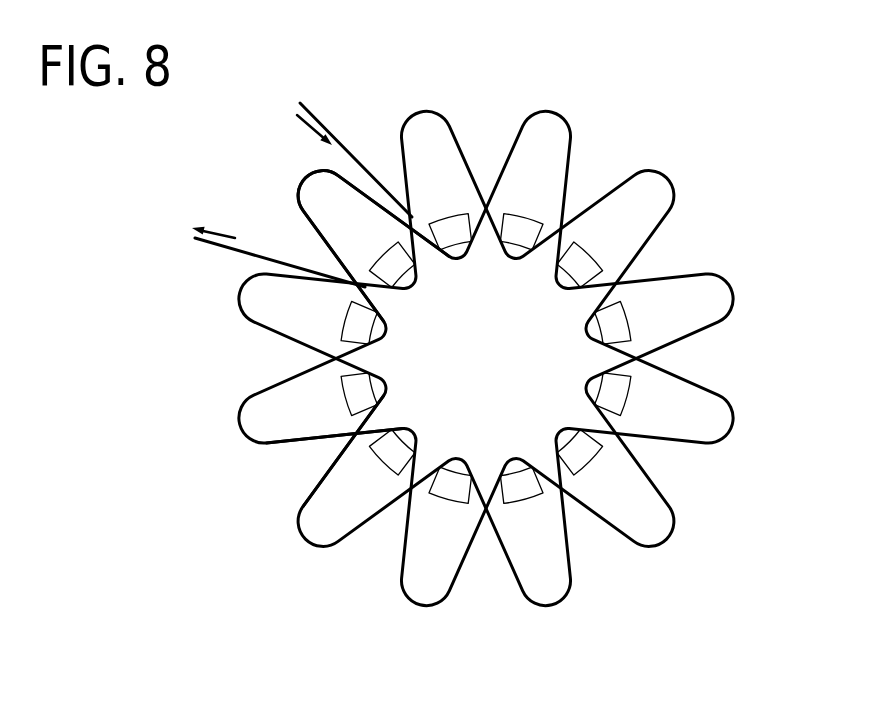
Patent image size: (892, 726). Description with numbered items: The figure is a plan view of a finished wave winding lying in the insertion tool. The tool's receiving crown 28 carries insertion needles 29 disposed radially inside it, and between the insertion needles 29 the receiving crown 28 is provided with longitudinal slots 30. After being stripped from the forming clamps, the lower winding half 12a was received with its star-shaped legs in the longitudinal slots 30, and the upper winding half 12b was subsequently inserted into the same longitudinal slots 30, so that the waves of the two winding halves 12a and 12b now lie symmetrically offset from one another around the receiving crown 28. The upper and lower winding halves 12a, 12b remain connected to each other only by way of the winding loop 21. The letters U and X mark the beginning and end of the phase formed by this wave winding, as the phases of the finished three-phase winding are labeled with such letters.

The lower winding half 12a is at (400, 593).
The upper winding half 12b is at (297, 533).
The winding loop 21 is at (382, 228).
The receiving crown 28 is at (466, 470).
The insertion needles 29 is at (593, 382).
The longitudinal slots 30 is at (347, 437).
The phase beginning/end label U is at (325, 127).
The phase beginning/end label X is at (213, 242).